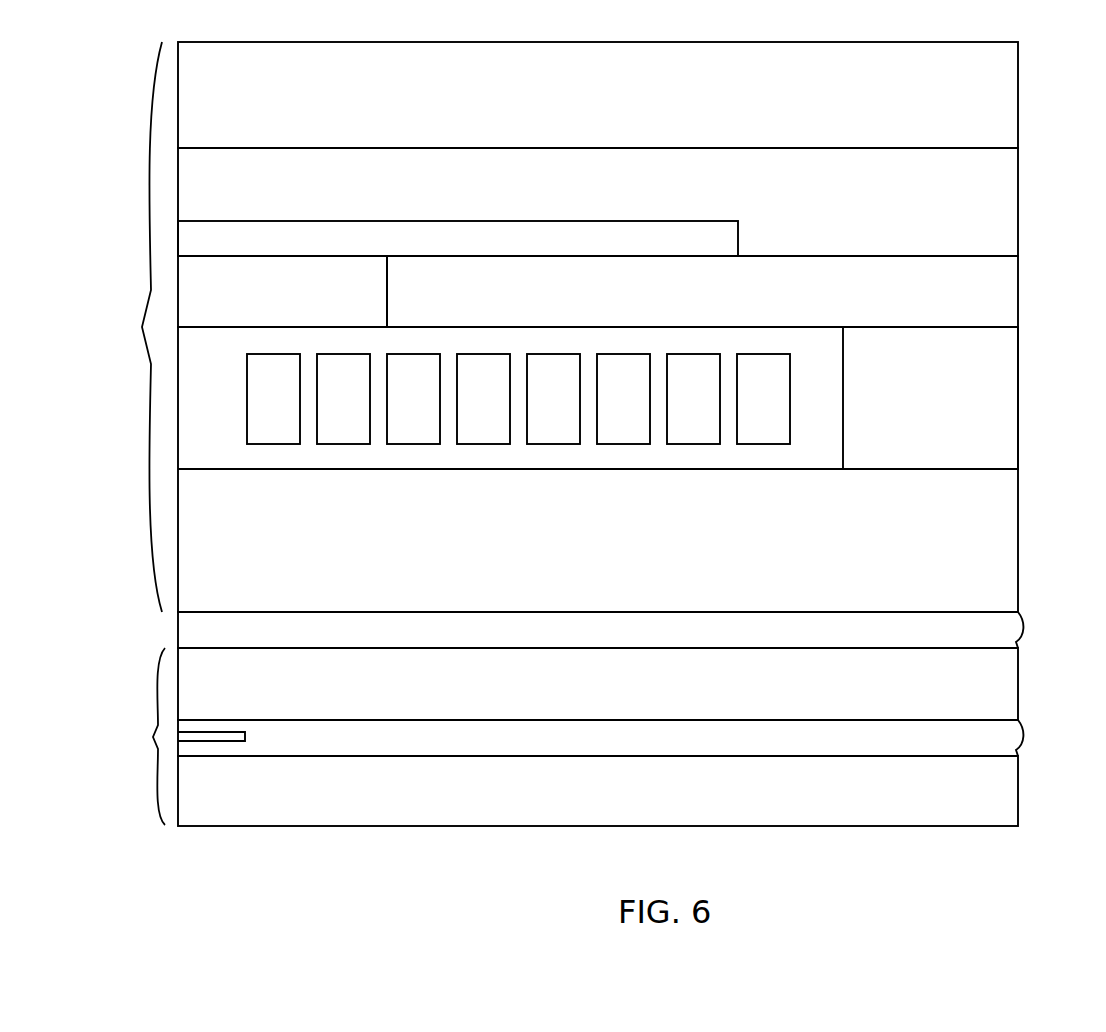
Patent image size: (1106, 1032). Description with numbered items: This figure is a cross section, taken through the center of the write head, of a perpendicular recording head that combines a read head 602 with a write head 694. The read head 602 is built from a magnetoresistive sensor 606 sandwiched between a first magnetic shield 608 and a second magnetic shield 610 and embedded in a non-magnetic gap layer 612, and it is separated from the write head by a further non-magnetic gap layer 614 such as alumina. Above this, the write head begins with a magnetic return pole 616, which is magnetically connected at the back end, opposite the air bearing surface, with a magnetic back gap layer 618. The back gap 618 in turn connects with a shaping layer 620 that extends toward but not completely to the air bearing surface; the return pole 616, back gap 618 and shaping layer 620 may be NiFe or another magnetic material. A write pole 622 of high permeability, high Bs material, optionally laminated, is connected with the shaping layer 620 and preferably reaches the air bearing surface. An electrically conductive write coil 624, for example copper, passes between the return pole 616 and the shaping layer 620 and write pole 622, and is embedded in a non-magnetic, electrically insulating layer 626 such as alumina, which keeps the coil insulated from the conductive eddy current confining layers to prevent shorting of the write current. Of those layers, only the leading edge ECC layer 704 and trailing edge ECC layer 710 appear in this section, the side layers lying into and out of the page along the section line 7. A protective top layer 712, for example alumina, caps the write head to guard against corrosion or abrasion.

The section line 7- 7 is at (73, 115).
The read head 602 is at (158, 698).
The magnetoresistive sensor 606 is at (245, 736).
The first magnetic shield 608 is at (650, 791).
The second magnetic shield 610 is at (652, 685).
The non-magnetic gap layer 612 is at (487, 740).
The non-magnetic gap layer 614 is at (439, 628).
The magnetic return pole 616 is at (650, 540).
The magnetic back gap layer 618 is at (965, 396).
The shaping layer 620 is at (760, 294).
The write pole 622 is at (508, 240).
The write coil 624 is at (633, 443).
The non-magnetic electrically insulating layer 626 is at (435, 456).
The device stack 694 is at (148, 169).
The leading edge ECC layer 704 is at (330, 294).
The trailing edge ECC layer 710 is at (650, 187).
The protective top layer 712 is at (628, 100).